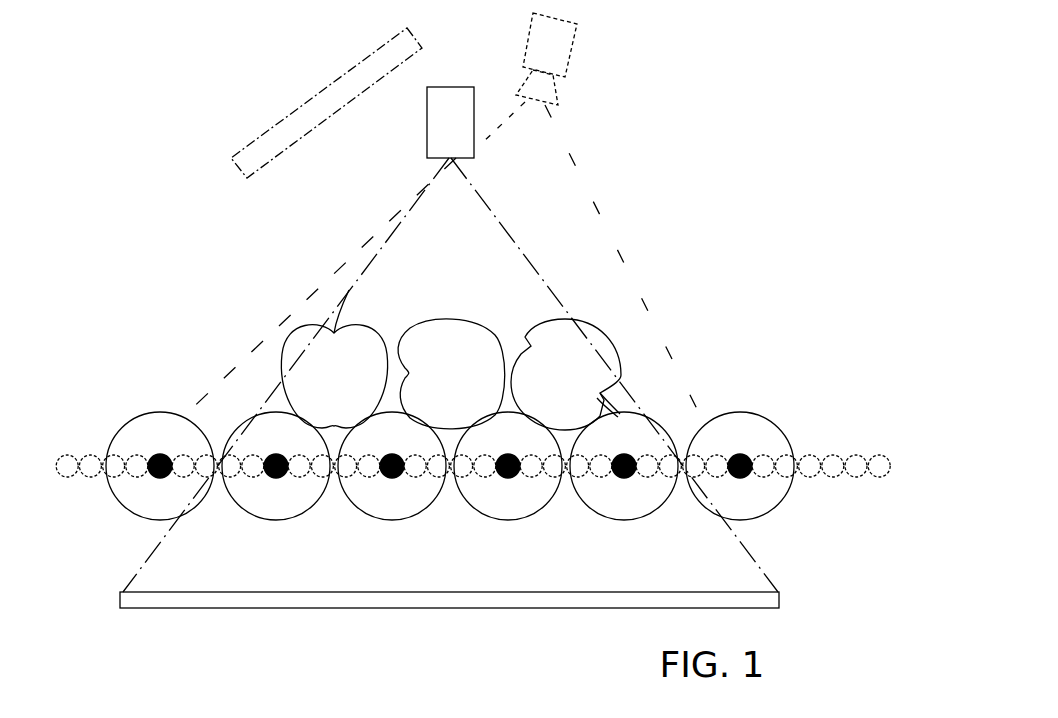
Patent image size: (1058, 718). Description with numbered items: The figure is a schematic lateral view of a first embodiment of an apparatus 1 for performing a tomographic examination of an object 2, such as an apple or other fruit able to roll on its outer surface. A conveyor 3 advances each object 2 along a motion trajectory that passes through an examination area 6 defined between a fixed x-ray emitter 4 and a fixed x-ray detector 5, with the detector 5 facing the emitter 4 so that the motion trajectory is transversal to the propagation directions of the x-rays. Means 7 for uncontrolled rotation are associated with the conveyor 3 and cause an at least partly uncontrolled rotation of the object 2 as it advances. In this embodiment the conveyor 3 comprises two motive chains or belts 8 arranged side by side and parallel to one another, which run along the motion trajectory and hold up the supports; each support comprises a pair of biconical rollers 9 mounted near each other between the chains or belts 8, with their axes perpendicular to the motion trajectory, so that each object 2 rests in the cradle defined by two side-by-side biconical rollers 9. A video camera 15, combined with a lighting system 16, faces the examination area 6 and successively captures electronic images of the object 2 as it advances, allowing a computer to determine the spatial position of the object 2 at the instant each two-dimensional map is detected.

The apparatus 1 is at (728, 260).
The object 2 is at (557, 368).
The conveyor 3 is at (783, 523).
The x-ray emitter 4 is at (450, 123).
The x-ray detector 5 is at (493, 600).
The examination area 6 is at (607, 278).
The means for uncontrolled rotation 7 is at (292, 535).
The motive chains or belts 8 is at (819, 462).
The biconical rollers 9 is at (625, 493).
The video camera 15 is at (558, 53).
The lighting system 16 is at (285, 124).